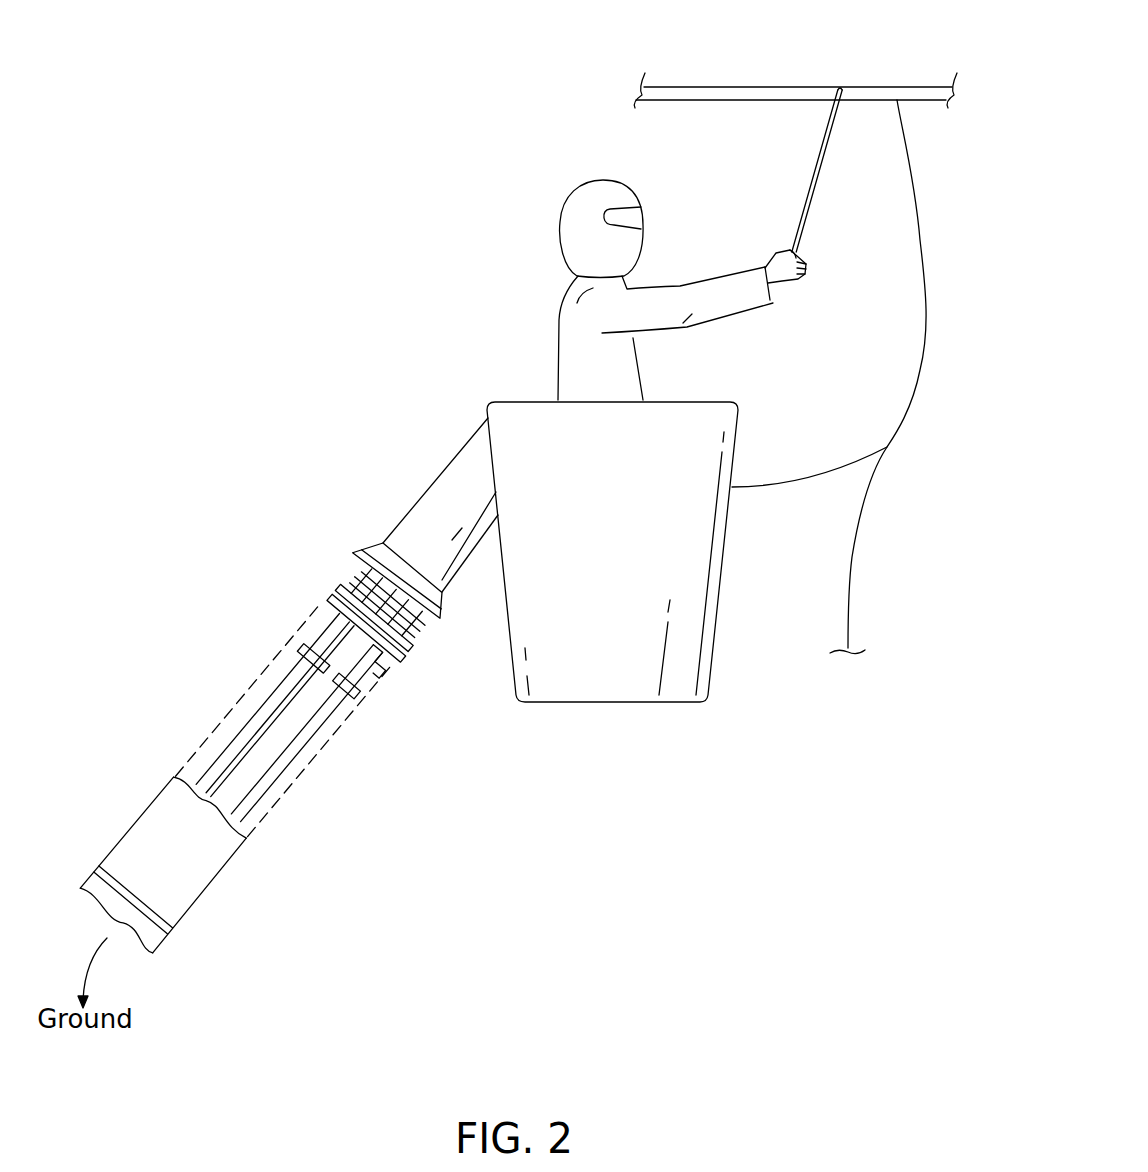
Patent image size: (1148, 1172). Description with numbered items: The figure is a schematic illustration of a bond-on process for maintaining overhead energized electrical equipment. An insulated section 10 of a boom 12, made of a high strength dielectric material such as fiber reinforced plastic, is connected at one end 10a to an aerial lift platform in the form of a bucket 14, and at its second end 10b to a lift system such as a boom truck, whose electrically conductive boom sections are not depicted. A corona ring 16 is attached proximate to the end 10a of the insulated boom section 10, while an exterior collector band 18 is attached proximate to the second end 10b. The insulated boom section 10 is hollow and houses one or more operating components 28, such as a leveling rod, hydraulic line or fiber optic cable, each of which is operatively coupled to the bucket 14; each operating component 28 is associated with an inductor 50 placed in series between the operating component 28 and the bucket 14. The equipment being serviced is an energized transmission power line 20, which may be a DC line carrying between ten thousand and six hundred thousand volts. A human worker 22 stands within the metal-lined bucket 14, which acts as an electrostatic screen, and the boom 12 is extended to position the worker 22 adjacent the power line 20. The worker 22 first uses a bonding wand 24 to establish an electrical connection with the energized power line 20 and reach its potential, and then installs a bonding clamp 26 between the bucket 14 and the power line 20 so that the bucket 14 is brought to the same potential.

The insulated section 10 is at (432, 483).
The first end 10a is at (462, 577).
The second end 10b is at (137, 813).
The boom 12 is at (207, 899).
The bucket 14 is at (645, 704).
The corona ring 16 is at (380, 545).
The exterior collector band 18 is at (147, 897).
The energized transmission power line 20 is at (718, 86).
The human worker 22 is at (558, 318).
The bonding wand 24 is at (821, 171).
The bonding clamp 26 is at (852, 557).
The operating components 28 is at (233, 732).
The inductor 50 is at (303, 648).